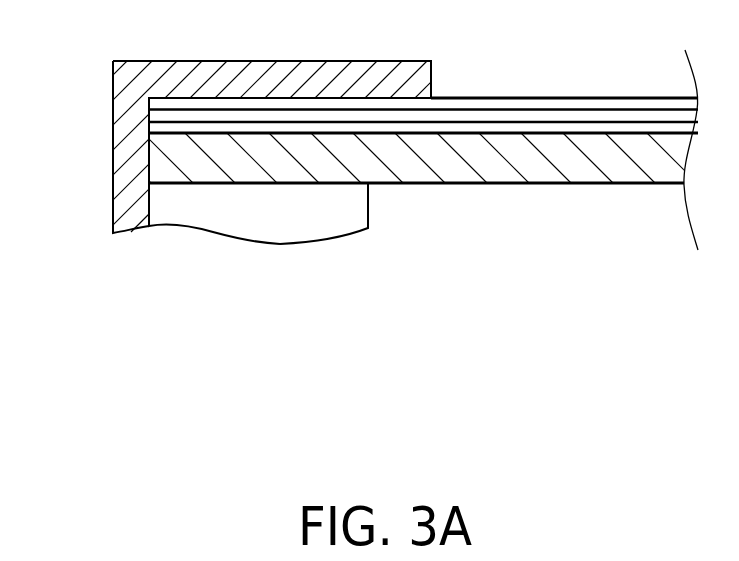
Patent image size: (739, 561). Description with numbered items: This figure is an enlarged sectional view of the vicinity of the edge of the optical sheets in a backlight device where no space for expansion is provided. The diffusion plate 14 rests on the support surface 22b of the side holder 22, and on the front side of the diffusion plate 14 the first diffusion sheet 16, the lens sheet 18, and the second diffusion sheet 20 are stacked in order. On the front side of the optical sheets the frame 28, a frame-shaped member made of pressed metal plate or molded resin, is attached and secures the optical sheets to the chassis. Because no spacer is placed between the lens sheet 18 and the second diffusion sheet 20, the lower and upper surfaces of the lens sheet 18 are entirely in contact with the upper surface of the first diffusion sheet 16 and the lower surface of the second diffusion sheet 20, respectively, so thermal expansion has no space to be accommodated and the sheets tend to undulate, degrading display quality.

The diffusion plate 14 is at (465, 183).
The first diffusion sheet 16 is at (517, 127).
The lens sheet 18 is at (567, 118).
The second diffusion sheet 20 is at (623, 100).
The side holder 22 is at (292, 227).
The support surface 22b is at (247, 183).
The frame 28 is at (110, 140).